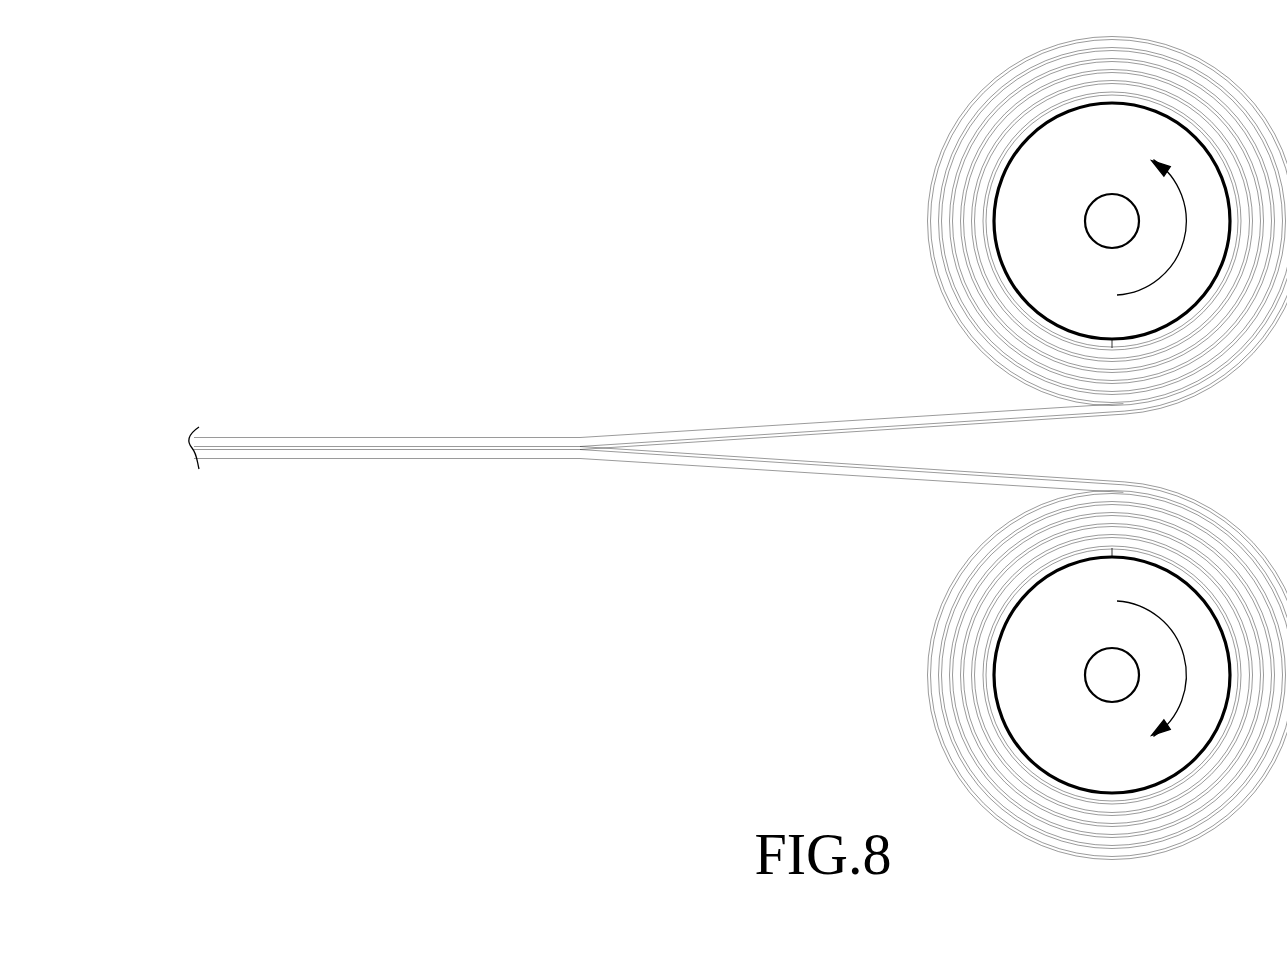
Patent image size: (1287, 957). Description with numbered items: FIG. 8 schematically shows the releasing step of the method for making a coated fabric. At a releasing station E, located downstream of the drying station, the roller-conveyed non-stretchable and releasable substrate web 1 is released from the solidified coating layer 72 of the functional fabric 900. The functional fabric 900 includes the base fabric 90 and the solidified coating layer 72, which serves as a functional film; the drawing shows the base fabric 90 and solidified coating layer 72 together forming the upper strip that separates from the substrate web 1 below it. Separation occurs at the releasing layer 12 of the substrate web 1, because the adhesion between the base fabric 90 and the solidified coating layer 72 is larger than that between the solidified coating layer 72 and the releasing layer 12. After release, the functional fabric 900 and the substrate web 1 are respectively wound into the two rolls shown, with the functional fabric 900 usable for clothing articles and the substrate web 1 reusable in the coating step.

The functional fabric 900 is at (745, 307).
The base fabric 90 is at (681, 431).
The solidified coating layer 72 is at (744, 437).
The releasing station E is at (812, 415).
The releasing layer 12 is at (883, 466).
The non-stretchable and releasable substrate web 1 is at (800, 471).